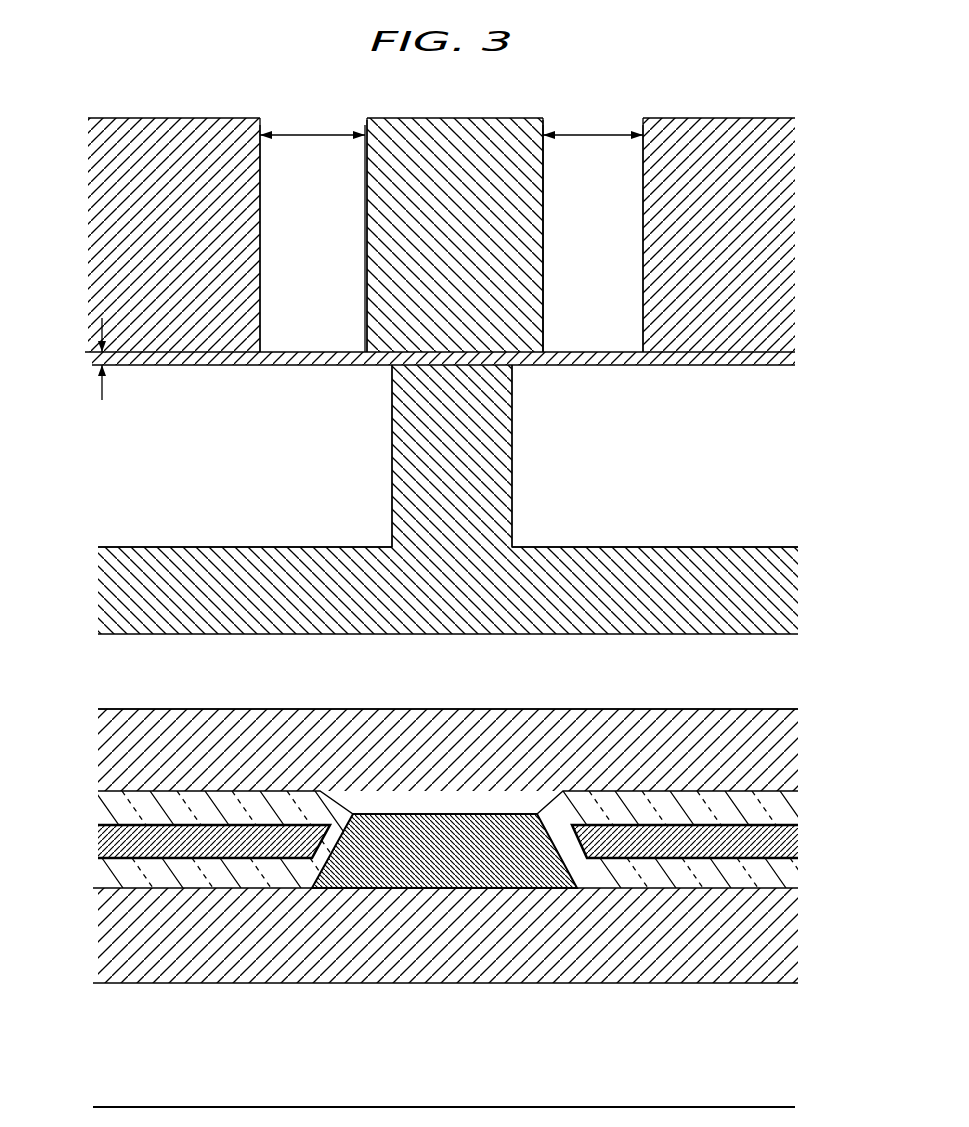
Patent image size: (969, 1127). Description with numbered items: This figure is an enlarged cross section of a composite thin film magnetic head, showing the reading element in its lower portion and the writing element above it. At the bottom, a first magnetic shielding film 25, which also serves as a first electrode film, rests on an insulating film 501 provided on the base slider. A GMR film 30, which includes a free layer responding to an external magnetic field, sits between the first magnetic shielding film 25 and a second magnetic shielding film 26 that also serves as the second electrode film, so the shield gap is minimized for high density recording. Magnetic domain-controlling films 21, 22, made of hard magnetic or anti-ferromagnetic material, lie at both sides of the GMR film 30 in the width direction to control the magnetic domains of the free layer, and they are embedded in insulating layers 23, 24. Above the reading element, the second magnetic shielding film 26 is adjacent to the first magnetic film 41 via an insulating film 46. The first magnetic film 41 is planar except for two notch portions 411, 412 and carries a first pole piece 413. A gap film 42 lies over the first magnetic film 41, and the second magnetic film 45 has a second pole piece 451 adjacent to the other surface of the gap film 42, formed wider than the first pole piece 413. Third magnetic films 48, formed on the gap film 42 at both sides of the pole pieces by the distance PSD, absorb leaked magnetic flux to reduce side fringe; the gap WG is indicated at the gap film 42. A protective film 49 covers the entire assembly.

The magnetic domain-controlling film 21 is at (160, 845).
The magnetic domain-controlling film 22 is at (752, 843).
The insulating layer 23 is at (179, 797).
The insulating layer 24 is at (701, 797).
The first magnetic shielding film 25 is at (390, 952).
The second magnetic shielding film 26 is at (767, 738).
The GMR film 30 is at (407, 813).
The first magnetic film 41 is at (118, 578).
The notch portion 411 is at (160, 546).
The notch portion 412 is at (698, 547).
The first pole piece 413 is at (497, 423).
The gap film 42 is at (563, 356).
The second magnetic film 45 is at (550, 249).
The second pole piece 451 is at (378, 195).
The insulating film 46 is at (520, 691).
The third magnetic film 48 is at (110, 121).
The protective film 49 is at (336, 270).
The insulating film 501 is at (522, 1060).
The distance PSD is at (306, 133).
The gap width WG is at (92, 362).